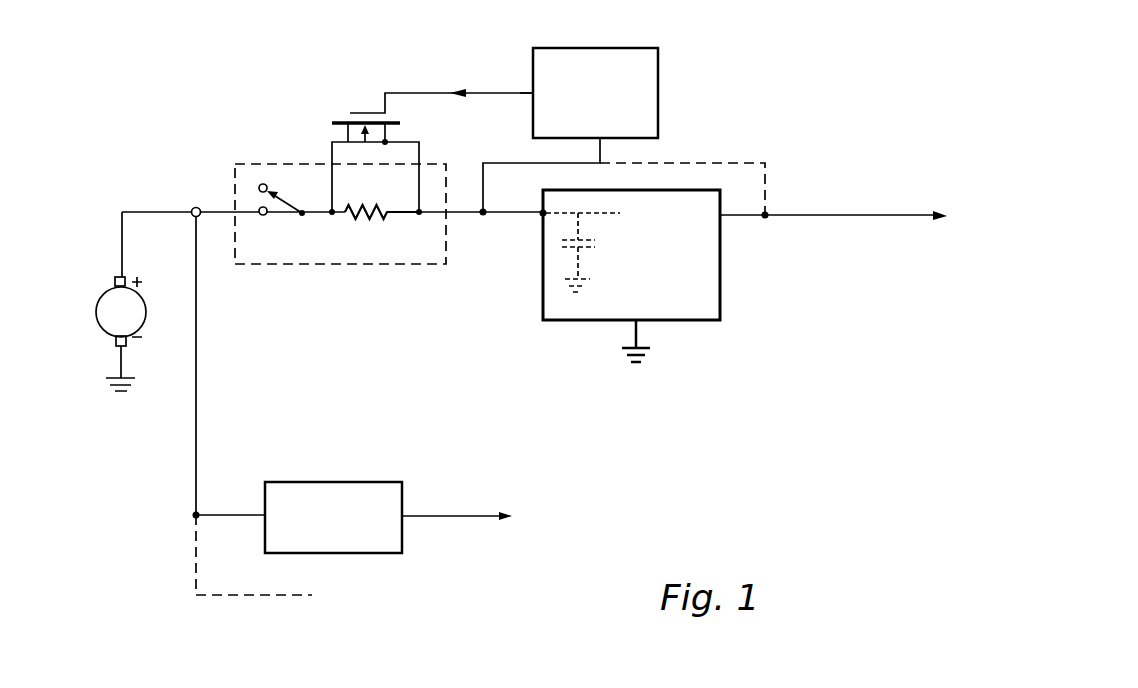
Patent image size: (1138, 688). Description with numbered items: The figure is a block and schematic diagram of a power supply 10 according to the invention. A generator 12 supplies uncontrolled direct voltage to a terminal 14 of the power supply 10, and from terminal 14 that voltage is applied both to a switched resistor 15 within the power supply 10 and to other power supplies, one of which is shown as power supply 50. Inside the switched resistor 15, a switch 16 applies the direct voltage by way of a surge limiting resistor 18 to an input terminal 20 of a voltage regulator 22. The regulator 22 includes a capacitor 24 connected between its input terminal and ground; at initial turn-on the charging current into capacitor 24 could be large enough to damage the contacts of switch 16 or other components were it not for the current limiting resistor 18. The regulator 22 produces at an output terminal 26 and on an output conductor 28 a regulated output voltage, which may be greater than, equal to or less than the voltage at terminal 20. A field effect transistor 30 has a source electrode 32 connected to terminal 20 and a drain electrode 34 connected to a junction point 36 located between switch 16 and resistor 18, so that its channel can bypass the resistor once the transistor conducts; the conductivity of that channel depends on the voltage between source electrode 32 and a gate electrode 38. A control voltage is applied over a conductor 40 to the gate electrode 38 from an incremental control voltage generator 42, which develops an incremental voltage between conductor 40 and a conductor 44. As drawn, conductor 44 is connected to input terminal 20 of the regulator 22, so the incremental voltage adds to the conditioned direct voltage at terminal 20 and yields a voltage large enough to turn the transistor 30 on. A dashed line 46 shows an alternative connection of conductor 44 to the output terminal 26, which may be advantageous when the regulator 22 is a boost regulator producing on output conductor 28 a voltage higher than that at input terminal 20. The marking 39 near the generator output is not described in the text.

The power supply 10 is at (387, 354).
The generator 12 is at (115, 290).
The terminal 14 is at (195, 207).
The switched resistor 15 is at (340, 265).
The switch 16 is at (283, 204).
The surge limiting resistor 18 is at (361, 218).
The input terminal 20 is at (541, 215).
The voltage regulator 22 is at (690, 321).
The capacitor 24 is at (584, 248).
The output terminal 26 is at (724, 217).
The output conductor 28 is at (847, 215).
The field effect transistor 30 is at (315, 95).
The source electrode 32 is at (386, 141).
The drain electrode 34 is at (347, 136).
The junction point 36 is at (331, 209).
The gate electrode 38 is at (378, 95).
The control voltage output 39 is at (533, 90).
The conductor 40 is at (491, 96).
The incremental control voltage generator 42 is at (658, 136).
The conductor 44 is at (600, 148).
The dashed line 46 is at (765, 180).
The power supply 50 is at (375, 554).